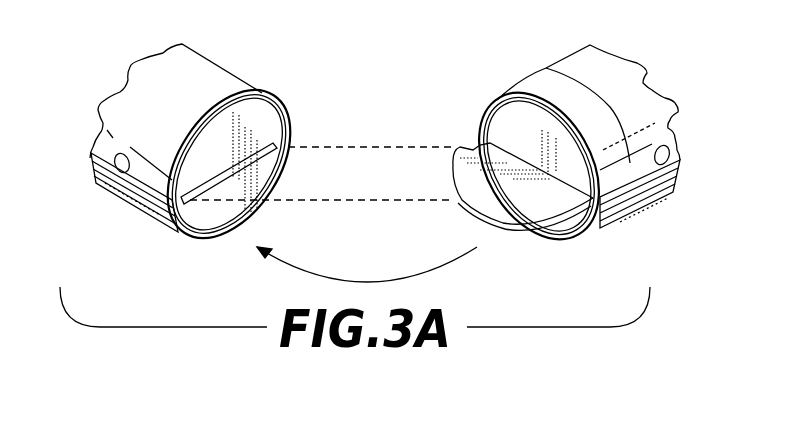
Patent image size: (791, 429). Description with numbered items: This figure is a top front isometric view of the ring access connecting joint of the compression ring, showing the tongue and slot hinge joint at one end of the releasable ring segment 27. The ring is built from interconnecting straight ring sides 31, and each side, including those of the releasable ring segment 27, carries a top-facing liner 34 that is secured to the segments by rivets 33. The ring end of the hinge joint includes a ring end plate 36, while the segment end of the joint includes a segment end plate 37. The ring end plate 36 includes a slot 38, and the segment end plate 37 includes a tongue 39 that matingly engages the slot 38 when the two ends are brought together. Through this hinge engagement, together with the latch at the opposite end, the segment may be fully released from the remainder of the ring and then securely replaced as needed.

The releasable ring segment 27 is at (645, 200).
The ring sides 31 is at (124, 204).
The rivets 33 is at (100, 168).
The top-facing liner 34 is at (203, 73).
The ring end plate 36 is at (260, 116).
The segment end plate 37 is at (502, 124).
The slot 38 is at (196, 204).
The tongue 39 is at (502, 198).